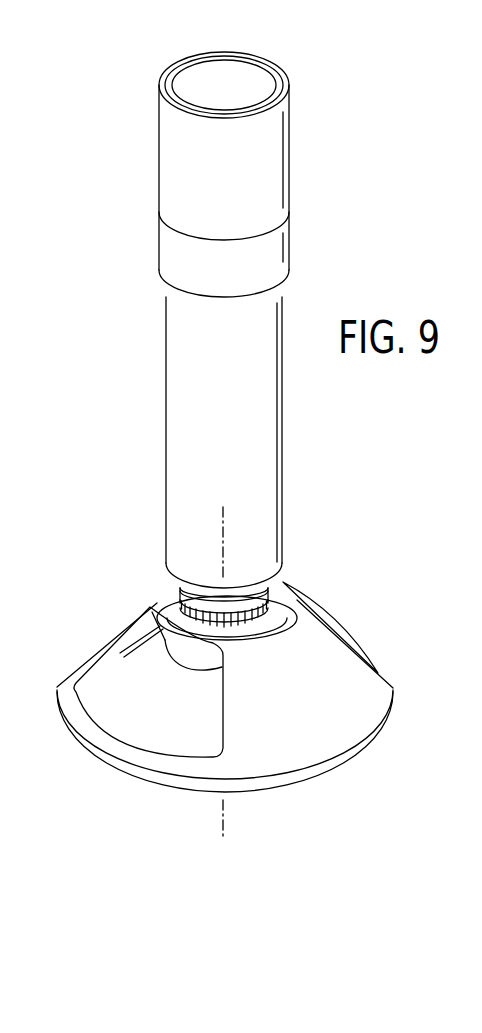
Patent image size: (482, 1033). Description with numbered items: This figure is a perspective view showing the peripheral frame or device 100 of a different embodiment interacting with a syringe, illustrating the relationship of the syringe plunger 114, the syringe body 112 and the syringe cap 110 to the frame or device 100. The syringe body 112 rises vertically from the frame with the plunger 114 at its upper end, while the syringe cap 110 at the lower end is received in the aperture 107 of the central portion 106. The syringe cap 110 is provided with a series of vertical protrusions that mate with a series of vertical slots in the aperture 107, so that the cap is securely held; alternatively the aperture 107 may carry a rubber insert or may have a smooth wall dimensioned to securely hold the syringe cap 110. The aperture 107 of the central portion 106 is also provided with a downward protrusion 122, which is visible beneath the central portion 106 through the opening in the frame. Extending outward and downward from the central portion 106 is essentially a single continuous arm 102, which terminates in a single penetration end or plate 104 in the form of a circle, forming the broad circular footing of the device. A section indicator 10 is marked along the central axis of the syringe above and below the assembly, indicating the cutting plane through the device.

The peripheral frame or device 100 is at (125, 515).
The syringe plunger 114 is at (290, 150).
The syringe body 112 is at (283, 443).
The aperture 107 is at (173, 583).
The syringe cap 110 is at (266, 600).
The central portion 106 is at (250, 623).
The arm 102 is at (80, 650).
The penetration end or plate 104 is at (323, 778).
The downward protrusion 122 is at (193, 677).
The section line 10 is at (223, 507).